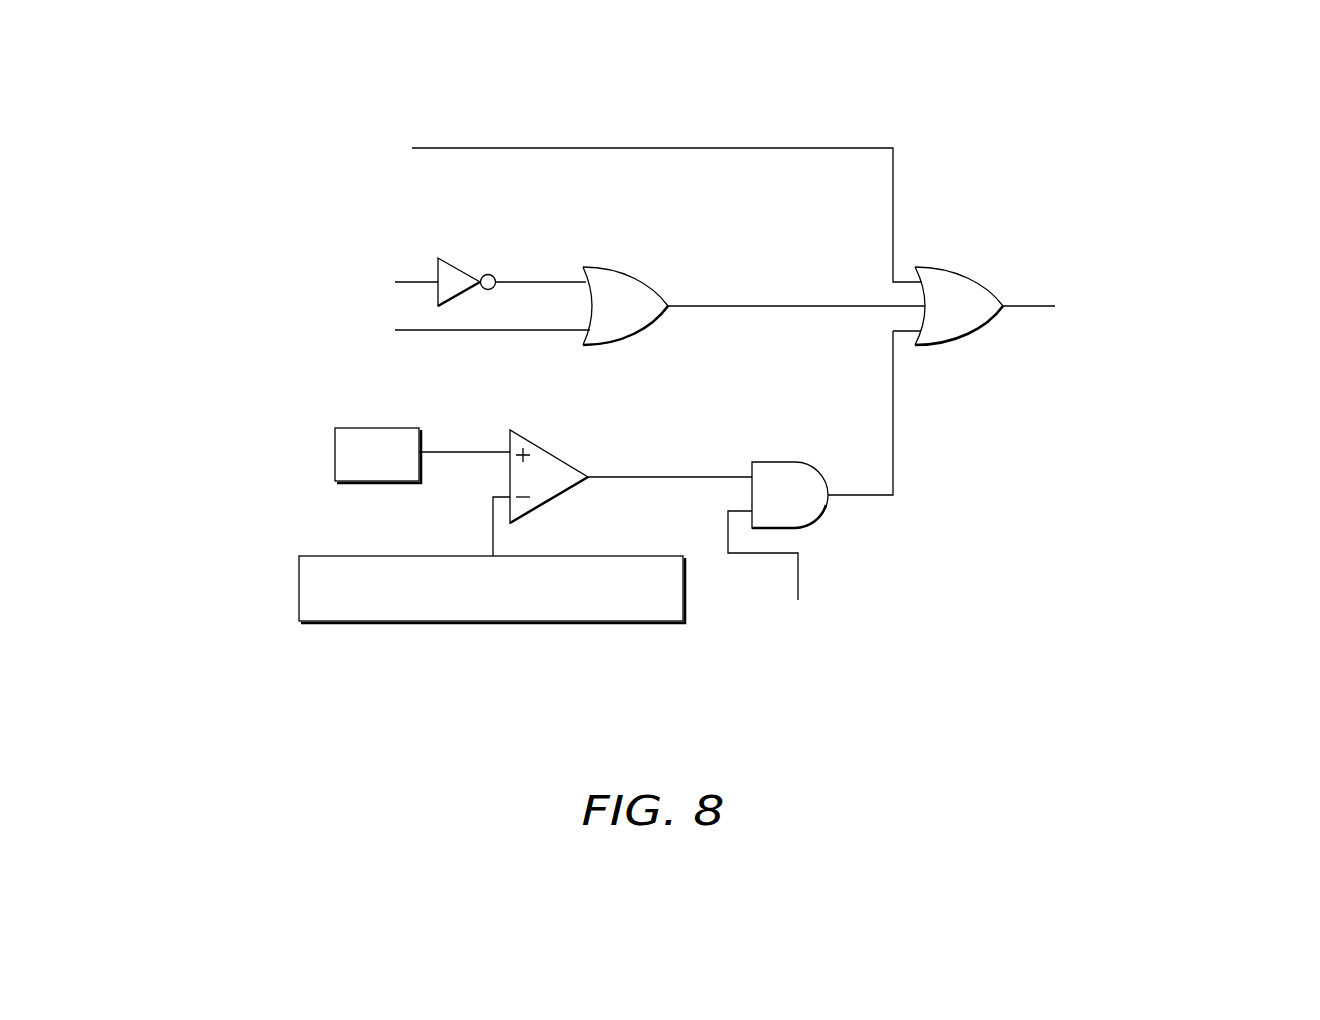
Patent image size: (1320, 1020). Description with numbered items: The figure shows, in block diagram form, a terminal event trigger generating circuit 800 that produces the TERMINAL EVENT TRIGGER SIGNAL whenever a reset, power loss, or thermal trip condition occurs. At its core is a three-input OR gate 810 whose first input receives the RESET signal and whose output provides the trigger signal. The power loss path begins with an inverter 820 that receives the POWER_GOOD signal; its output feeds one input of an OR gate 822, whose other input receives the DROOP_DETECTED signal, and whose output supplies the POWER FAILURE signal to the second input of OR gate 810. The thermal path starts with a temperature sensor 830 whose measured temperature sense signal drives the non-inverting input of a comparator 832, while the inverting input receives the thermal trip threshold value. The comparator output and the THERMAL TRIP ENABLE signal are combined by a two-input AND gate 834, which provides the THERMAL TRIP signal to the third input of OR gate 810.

The terminal event trigger generating circuit 800 is at (200, 76).
The OR gate 810 is at (972, 275).
The inverter 820 is at (458, 264).
The OR gate 822 is at (612, 266).
The temperature sensor 830 is at (376, 427).
The comparator 832 is at (538, 446).
The AND gate 834 is at (778, 462).